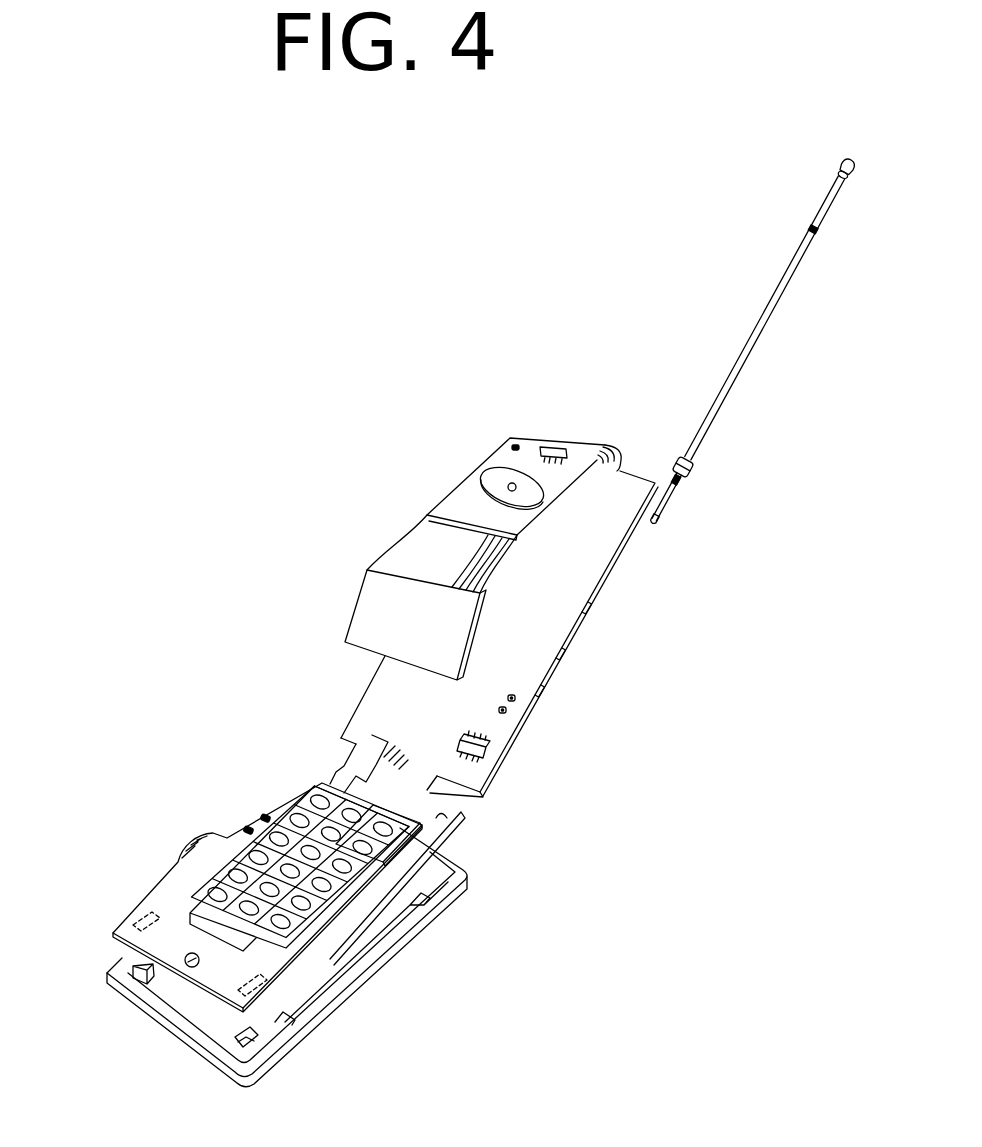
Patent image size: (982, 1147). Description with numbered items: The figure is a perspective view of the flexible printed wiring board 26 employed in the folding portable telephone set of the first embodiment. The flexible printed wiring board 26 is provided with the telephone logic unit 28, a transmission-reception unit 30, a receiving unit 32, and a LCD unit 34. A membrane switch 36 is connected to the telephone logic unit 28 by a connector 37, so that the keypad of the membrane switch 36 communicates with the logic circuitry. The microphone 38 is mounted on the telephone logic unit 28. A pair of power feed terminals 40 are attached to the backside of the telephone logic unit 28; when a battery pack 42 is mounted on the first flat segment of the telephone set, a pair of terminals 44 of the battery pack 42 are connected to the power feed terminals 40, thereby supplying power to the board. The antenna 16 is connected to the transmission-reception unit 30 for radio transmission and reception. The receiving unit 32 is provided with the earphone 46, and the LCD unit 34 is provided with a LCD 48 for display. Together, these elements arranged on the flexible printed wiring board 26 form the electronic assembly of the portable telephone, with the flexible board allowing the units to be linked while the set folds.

The antenna 16 is at (765, 318).
The flexible printed wiring board 26 is at (346, 706).
The telephone logic unit 28 is at (458, 818).
The transmission-reception unit 30 is at (598, 551).
The receiving unit 32 is at (457, 496).
The LCD unit 34 is at (480, 627).
The membrane switch 36 is at (310, 796).
The connector 37 is at (190, 862).
The microphone 38 is at (180, 968).
The power feed terminals 40 is at (132, 912).
The battery pack 42 is at (382, 948).
The terminals 44 is at (135, 967).
The earphone 46 is at (498, 478).
The LCD 48 is at (372, 600).